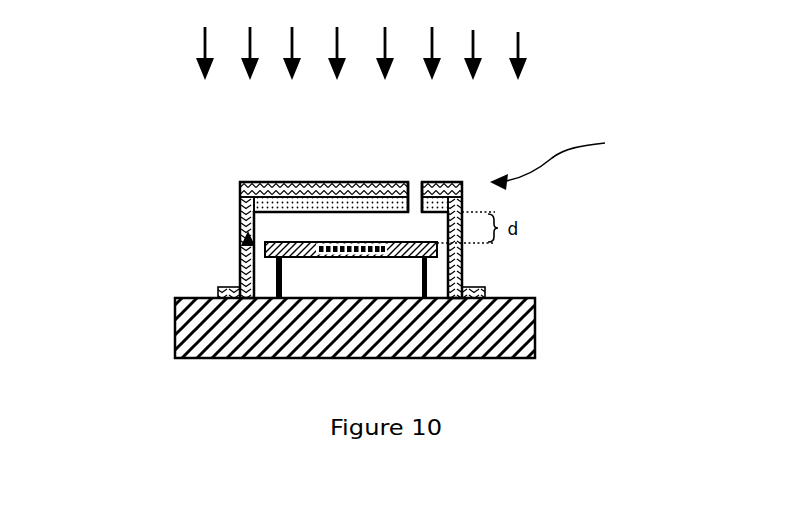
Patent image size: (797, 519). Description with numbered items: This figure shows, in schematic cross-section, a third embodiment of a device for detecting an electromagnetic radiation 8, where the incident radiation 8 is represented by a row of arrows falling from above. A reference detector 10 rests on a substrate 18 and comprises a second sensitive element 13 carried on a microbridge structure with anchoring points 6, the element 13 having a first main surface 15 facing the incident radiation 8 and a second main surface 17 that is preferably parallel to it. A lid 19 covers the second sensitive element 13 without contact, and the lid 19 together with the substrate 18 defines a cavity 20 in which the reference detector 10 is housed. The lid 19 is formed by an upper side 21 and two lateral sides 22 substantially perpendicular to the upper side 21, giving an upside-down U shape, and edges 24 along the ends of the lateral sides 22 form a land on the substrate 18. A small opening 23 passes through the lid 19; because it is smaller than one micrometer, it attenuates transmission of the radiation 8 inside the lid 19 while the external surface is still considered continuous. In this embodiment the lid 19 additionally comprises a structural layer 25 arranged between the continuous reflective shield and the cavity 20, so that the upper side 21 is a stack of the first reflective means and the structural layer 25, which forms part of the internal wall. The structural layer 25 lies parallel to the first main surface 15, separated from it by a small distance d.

The electromagnetic radiation 8 is at (518, 50).
The upper side 21 is at (282, 182).
The lateral sides 22 is at (240, 217).
The opening 23 is at (414, 190).
The structural layer 25 is at (393, 200).
The lid 19 is at (566, 158).
The reference detector 10 is at (243, 240).
The anchoring points 6 is at (278, 270).
The second main surface 17 is at (348, 257).
The second sensitive element 13 is at (356, 242).
The first main surface 15 is at (345, 243).
The cavity 20 is at (435, 273).
The edges 24 is at (473, 287).
The substrate 18 is at (535, 312).